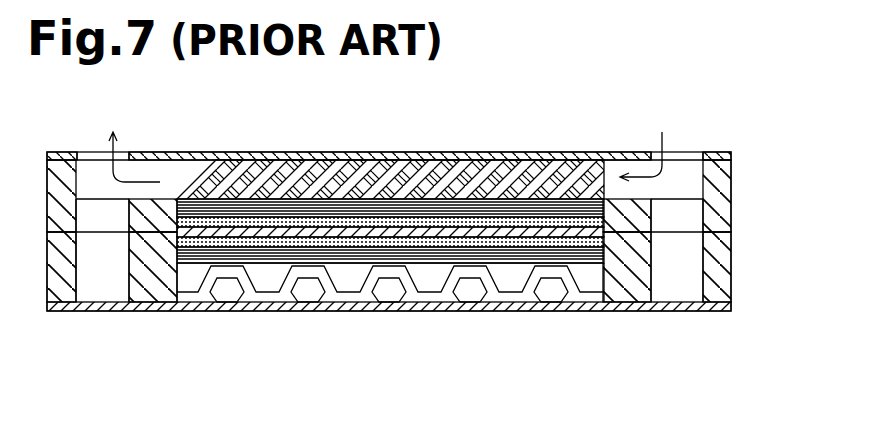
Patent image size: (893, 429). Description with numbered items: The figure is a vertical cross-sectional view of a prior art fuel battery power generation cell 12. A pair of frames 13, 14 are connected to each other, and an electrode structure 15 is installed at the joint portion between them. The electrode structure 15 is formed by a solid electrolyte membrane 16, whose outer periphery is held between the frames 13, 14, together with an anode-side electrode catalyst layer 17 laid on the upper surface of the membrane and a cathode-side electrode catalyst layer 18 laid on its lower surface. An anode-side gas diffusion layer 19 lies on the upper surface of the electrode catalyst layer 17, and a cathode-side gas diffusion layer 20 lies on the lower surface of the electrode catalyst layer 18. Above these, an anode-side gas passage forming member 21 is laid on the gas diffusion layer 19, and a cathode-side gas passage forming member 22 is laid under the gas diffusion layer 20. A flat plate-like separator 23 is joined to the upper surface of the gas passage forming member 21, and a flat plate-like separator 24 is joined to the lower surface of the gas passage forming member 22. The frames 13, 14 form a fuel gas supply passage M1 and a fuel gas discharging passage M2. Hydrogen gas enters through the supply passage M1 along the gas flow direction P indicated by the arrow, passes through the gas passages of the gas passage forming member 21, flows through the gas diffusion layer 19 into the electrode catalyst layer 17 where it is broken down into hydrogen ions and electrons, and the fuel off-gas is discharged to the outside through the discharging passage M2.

The fuel cell 12 is at (623, 122).
The frame 13 is at (742, 199).
The frame 14 is at (742, 266).
The electrode structure 15 is at (445, 222).
The solid electrolyte membrane 16 is at (412, 215).
The anode-side electrode catalyst layer 17 is at (483, 232).
The cathode-side electrode catalyst layer 18 is at (472, 246).
The anode-side gas diffusion layer 19 is at (537, 242).
The cathode-side gas diffusion layer 20 is at (512, 263).
The anode-side gas passage forming member 21 is at (262, 160).
The cathode-side gas passage forming member 22 is at (310, 288).
The separator 23 is at (210, 160).
The separator 24 is at (213, 311).
The fuel gas supply passage M1 is at (683, 170).
The fuel gas discharging passage M2 is at (98, 180).
The gas flow direction P is at (644, 143).